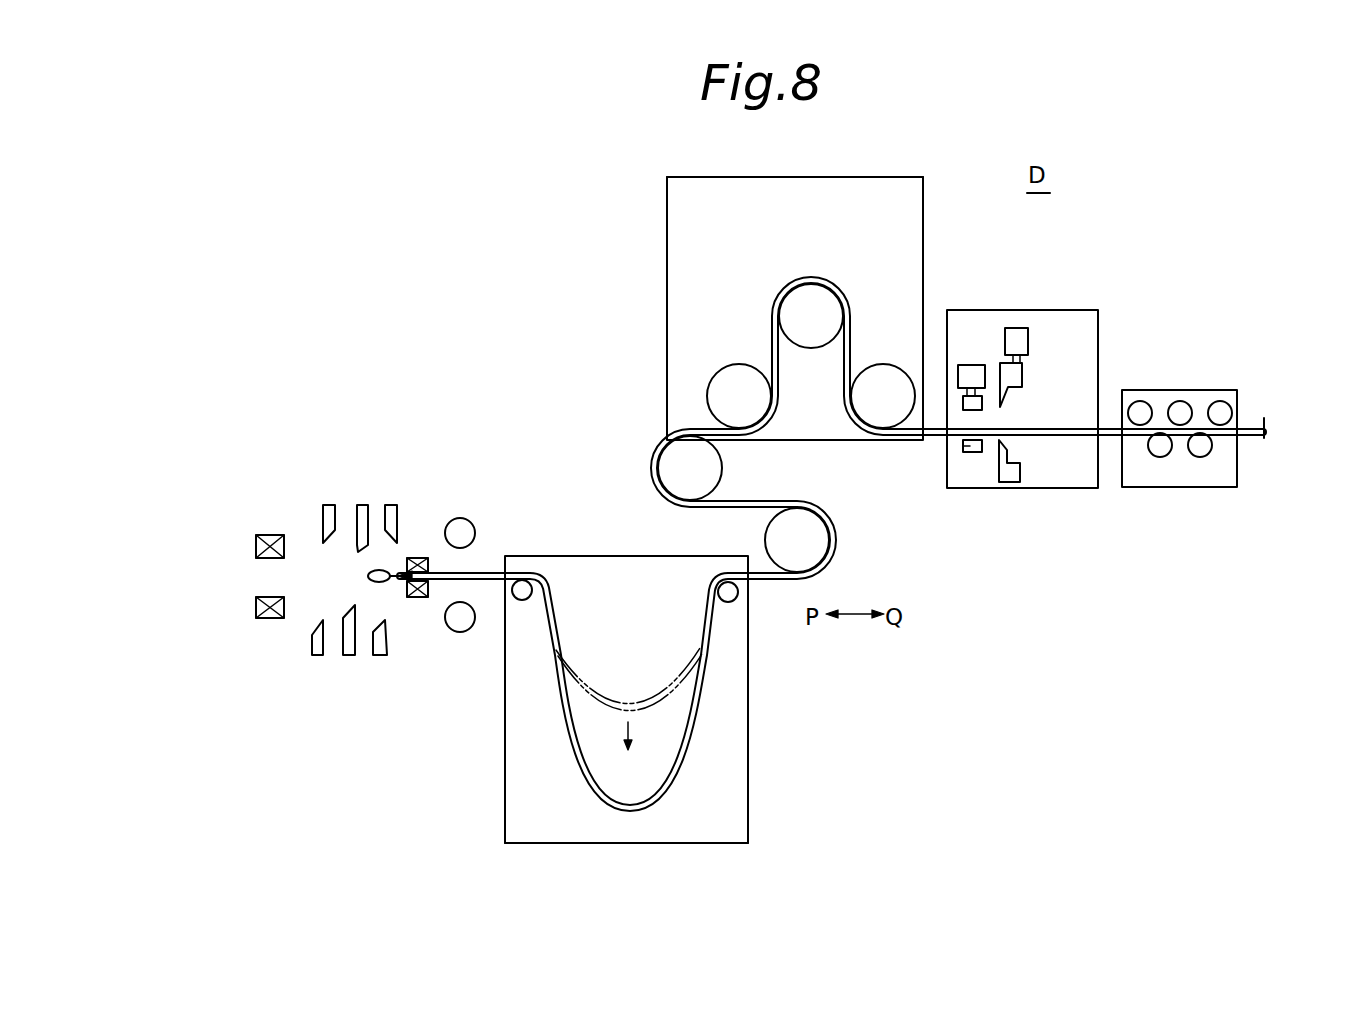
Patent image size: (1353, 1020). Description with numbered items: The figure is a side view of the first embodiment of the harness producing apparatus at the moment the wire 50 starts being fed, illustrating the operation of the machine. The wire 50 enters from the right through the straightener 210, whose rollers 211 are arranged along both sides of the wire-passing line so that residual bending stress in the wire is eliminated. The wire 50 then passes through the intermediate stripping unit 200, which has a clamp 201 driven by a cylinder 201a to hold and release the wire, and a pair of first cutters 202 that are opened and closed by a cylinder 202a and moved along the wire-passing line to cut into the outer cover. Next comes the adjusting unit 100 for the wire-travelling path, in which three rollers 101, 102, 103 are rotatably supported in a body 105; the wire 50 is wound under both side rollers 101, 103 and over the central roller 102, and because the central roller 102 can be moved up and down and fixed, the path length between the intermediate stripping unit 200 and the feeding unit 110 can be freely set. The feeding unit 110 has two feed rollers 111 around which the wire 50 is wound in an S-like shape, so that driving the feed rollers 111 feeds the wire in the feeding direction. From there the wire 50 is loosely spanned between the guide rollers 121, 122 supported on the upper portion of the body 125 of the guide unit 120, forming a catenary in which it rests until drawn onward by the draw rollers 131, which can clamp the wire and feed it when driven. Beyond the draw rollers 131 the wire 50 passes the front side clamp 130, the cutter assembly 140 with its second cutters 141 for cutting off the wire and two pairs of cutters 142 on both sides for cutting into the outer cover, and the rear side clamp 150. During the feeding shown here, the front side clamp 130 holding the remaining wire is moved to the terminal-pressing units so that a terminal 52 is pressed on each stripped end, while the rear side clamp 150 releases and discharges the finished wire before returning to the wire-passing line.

The wire 50 is at (1248, 420).
The adjusting unit for the wire-travelling path 100 is at (667, 272).
The side roller 101 is at (877, 374).
The central roller 102 is at (808, 335).
The side roller 103 is at (722, 374).
The body 105 is at (883, 177).
The feeding unit 110 is at (806, 504).
The feed rollers 111 is at (712, 468).
The guide unit 120 is at (748, 700).
The guide roller 121 is at (738, 594).
The guide roller 122 is at (512, 598).
The body 125 is at (748, 745).
The front side clamp 130 is at (418, 558).
The draw rollers 131 is at (470, 530).
The cutter assembly 140 is at (375, 478).
The second cutters 141 is at (348, 660).
The cutters 142 is at (335, 507).
The rear side clamp 150 is at (268, 625).
The terminal 52 is at (383, 582).
The intermediate stripping unit 200 is at (1098, 325).
The clamp 201 is at (962, 447).
The cylinder 201a is at (972, 365).
The first cutters 202 is at (1003, 452).
The cylinder 202a is at (1018, 328).
The straightener 210 is at (1197, 390).
The rollers 211 is at (1140, 404).